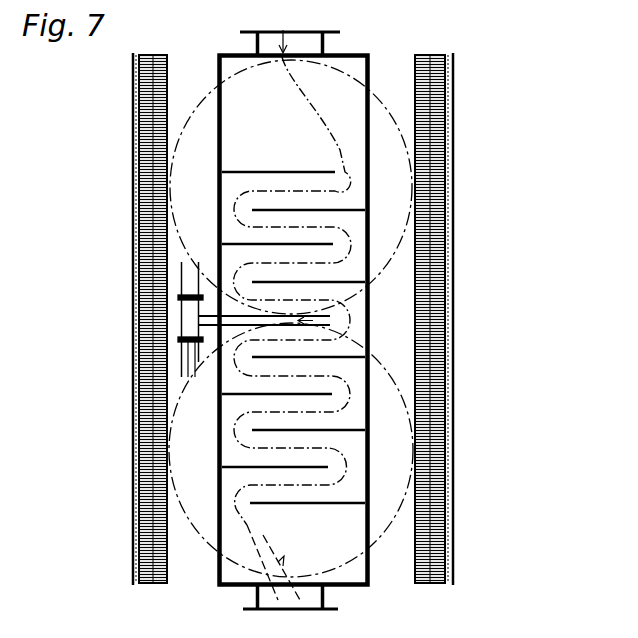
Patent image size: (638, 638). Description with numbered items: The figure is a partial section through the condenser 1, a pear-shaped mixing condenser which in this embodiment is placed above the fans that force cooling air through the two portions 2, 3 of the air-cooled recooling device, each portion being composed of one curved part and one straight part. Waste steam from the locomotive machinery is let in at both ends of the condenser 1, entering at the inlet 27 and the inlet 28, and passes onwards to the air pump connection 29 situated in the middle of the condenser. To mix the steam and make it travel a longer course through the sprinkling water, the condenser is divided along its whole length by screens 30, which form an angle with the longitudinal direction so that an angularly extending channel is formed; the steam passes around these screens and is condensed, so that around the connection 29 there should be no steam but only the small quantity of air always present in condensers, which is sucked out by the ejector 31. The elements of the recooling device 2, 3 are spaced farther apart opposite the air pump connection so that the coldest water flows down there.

The condenser 1 is at (354, 60).
The recooling device portion 2 is at (137, 70).
The recooling device portion 3 is at (447, 179).
The steam inlet 27 is at (307, 40).
The steam inlet 28 is at (308, 600).
The air pump connection 29 is at (327, 323).
The screens 30 is at (232, 240).
The ejector 31 is at (185, 319).